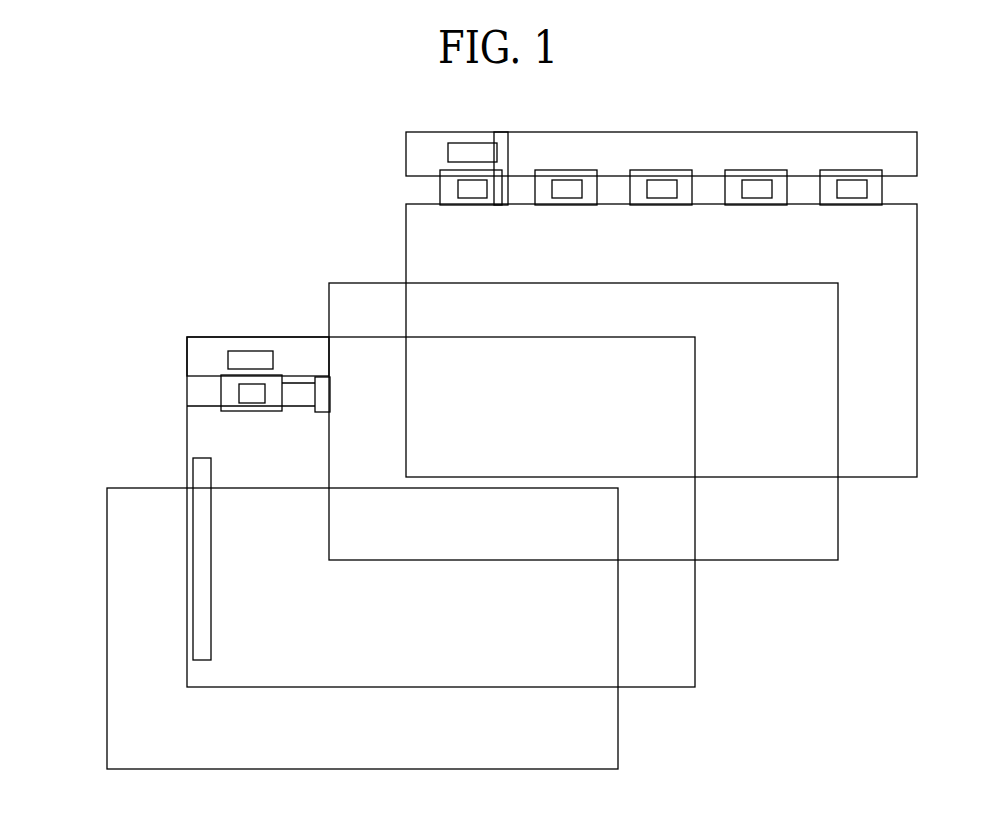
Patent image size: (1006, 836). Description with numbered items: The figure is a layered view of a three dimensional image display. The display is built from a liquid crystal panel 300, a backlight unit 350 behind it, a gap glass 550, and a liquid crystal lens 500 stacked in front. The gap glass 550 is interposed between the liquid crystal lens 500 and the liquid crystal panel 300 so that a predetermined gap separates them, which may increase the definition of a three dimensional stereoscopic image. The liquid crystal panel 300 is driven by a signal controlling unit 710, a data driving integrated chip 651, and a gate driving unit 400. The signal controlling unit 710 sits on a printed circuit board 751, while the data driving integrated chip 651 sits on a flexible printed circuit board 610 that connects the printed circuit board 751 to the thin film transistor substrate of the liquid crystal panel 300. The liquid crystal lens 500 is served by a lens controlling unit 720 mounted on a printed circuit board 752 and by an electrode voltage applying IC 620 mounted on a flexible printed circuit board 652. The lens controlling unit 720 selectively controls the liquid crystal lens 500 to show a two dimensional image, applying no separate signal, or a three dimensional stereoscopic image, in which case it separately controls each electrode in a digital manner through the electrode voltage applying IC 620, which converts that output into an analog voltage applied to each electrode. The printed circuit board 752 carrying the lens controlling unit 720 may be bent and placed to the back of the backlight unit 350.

The liquid crystal panel 300 is at (695, 620).
The backlight unit 350 is at (618, 724).
The gate driving unit 400 is at (191, 568).
The liquid crystal lens 500 is at (917, 341).
The gap glass 550 is at (838, 520).
The flexible printed circuit board 610 is at (221, 388).
The electrode voltage applying IC 620 is at (509, 132).
The data driving integrated chip 651 is at (239, 398).
The flexible printed circuit board 652 is at (488, 186).
The signal controlling unit 710 is at (228, 359).
The lens controlling unit 720 is at (462, 142).
The printed circuit board 751 is at (223, 337).
The printed circuit board 752 is at (729, 132).